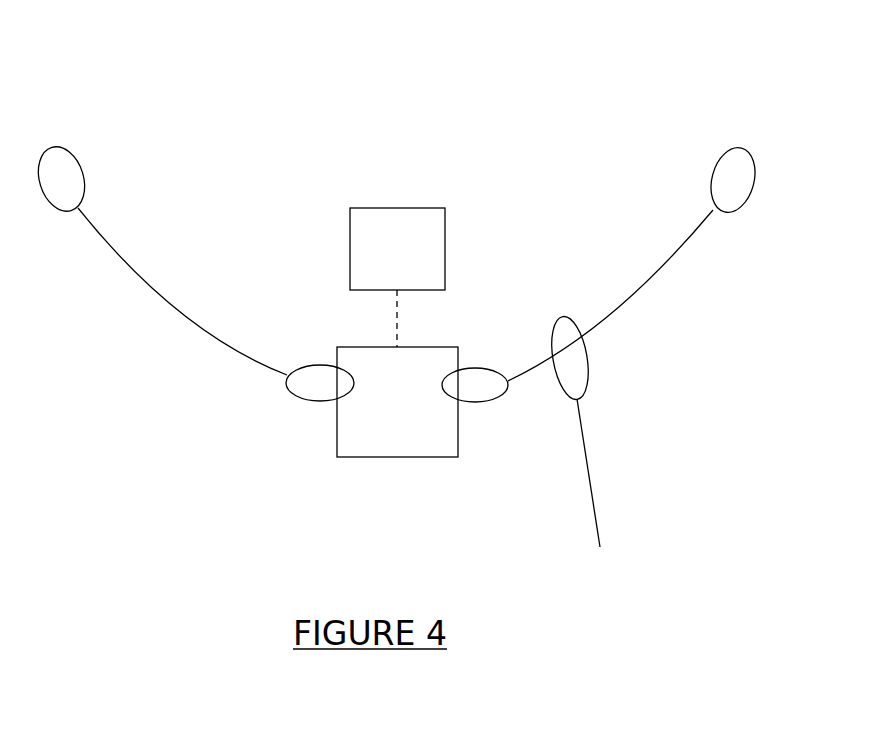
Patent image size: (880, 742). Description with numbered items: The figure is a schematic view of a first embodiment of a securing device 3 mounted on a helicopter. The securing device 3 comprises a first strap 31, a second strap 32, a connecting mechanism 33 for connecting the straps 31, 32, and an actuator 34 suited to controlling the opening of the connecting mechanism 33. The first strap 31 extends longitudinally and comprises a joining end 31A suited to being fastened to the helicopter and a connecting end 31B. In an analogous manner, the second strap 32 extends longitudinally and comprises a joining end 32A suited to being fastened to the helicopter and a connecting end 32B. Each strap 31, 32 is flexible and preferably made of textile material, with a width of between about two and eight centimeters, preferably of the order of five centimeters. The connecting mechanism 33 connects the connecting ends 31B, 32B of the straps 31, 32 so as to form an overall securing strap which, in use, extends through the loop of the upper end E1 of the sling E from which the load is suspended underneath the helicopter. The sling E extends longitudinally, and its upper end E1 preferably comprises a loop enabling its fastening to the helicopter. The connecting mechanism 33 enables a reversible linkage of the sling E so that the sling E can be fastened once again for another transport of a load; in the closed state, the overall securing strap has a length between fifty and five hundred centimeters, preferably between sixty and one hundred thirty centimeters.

The securing device 3 is at (458, 82).
The first strap 31 is at (130, 267).
The joining end 31A is at (75, 152).
The connecting end 31B is at (300, 400).
The second strap 32 is at (662, 265).
The joining end 32A is at (741, 146).
The connecting end 32B is at (490, 405).
The connecting mechanism 33 is at (453, 347).
The actuator 34 is at (413, 208).
The sling E is at (592, 465).
The upper end E1 is at (594, 359).